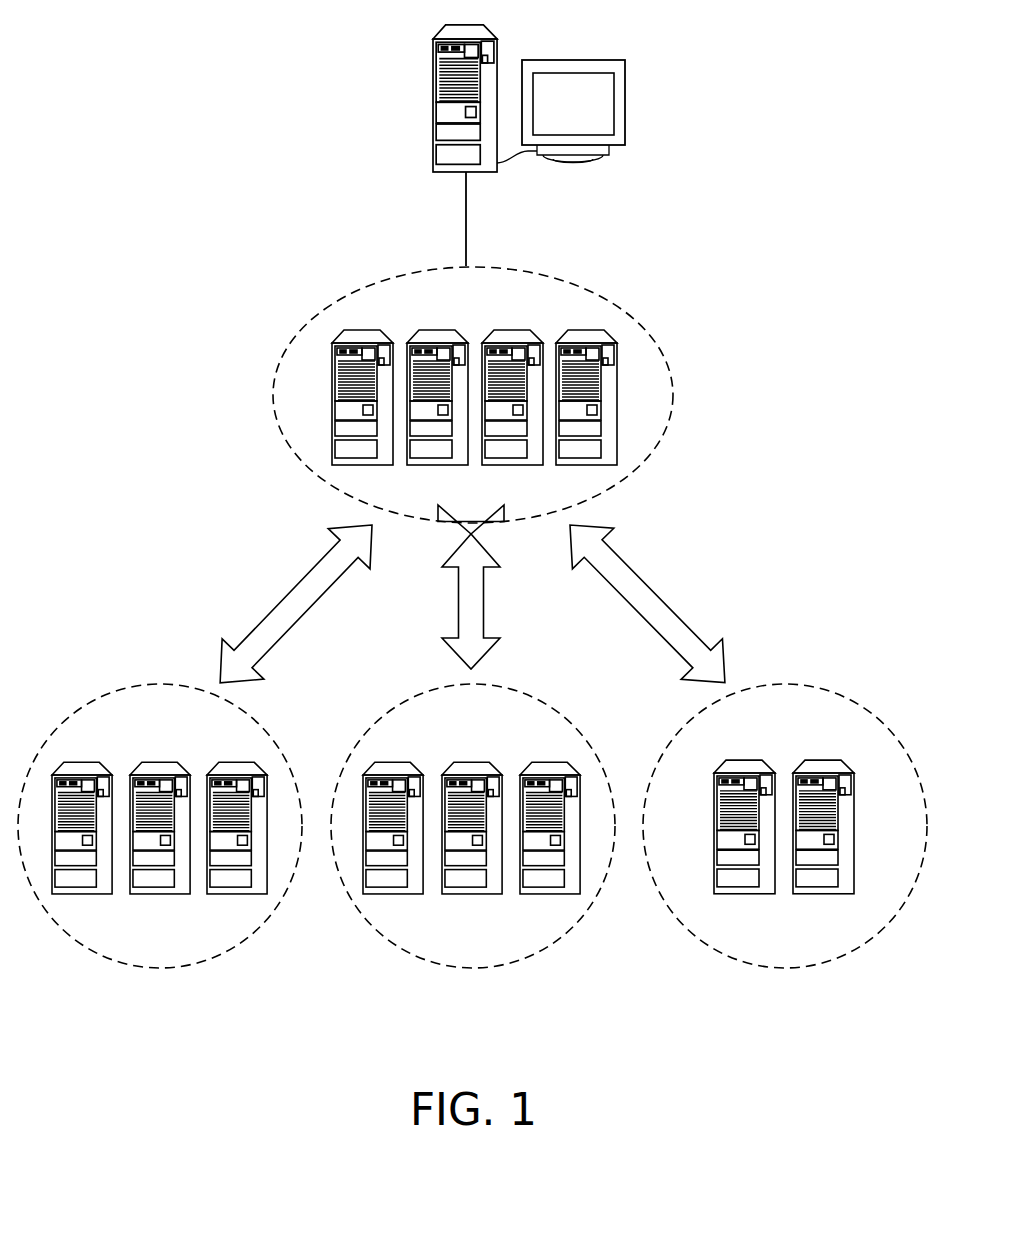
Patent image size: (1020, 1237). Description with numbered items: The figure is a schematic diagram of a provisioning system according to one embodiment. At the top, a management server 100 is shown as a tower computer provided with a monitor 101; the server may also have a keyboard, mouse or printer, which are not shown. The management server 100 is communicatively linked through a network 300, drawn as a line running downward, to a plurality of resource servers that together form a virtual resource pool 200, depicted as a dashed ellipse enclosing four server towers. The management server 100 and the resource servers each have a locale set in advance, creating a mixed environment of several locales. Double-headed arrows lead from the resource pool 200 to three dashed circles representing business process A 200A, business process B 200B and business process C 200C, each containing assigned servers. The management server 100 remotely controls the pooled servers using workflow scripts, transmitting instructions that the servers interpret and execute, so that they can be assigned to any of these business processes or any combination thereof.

The management server 100 is at (433, 100).
The monitor 101 is at (565, 60).
The network 300 is at (466, 213).
The resource pool 200 is at (646, 339).
The business process A 200A is at (255, 725).
The business process B 200B is at (543, 710).
The business process C 200C is at (847, 702).